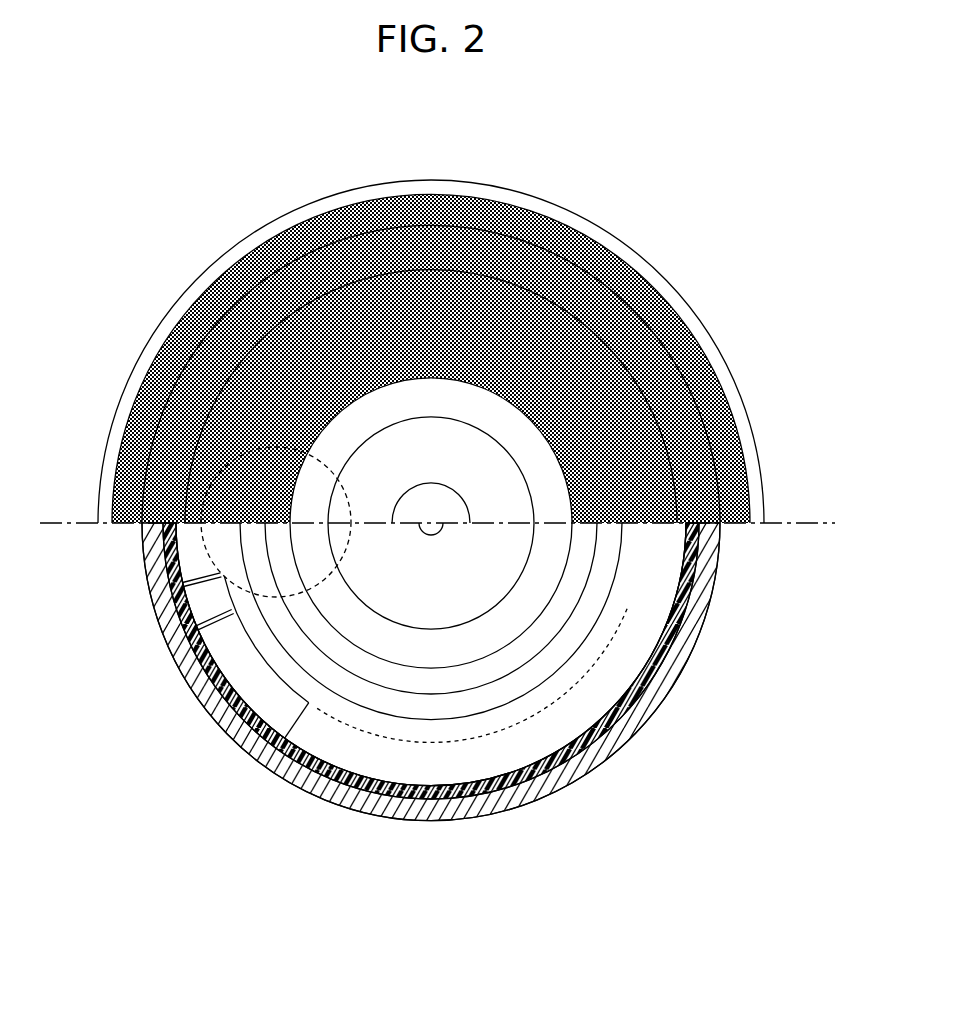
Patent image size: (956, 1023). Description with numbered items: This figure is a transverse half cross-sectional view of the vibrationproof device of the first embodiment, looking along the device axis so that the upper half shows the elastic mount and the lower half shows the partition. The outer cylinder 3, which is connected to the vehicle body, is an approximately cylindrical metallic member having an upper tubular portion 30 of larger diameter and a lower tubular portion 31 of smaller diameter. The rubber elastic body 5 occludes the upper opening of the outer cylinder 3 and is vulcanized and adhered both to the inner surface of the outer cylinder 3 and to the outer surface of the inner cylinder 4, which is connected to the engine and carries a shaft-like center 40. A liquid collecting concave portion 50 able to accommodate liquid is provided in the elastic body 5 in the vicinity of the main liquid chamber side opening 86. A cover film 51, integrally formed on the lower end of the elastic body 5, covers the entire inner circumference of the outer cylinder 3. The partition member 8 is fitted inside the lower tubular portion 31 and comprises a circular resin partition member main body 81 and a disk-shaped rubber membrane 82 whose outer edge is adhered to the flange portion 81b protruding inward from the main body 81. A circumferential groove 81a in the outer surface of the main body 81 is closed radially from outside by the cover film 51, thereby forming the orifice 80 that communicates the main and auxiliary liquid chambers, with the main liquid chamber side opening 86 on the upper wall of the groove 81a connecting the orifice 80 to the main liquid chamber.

The outer cylinder 3 is at (640, 252).
The upper tubular portion 30 is at (197, 283).
The elastic body 5 is at (273, 353).
The inner cylinder 4 is at (377, 435).
The shaft 40 is at (432, 490).
The liquid collecting concave portion 50 is at (240, 455).
The cover film 51 is at (183, 647).
The partition member 8 is at (429, 745).
The orifice 80 is at (246, 655).
The partition member main body 81 is at (435, 767).
The circumferential groove 81a is at (620, 617).
The flange portion 81b is at (557, 655).
The membrane 82 is at (488, 657).
The main liquid chamber side opening 86 is at (230, 710).
The lower tubular portion 31 is at (346, 816).